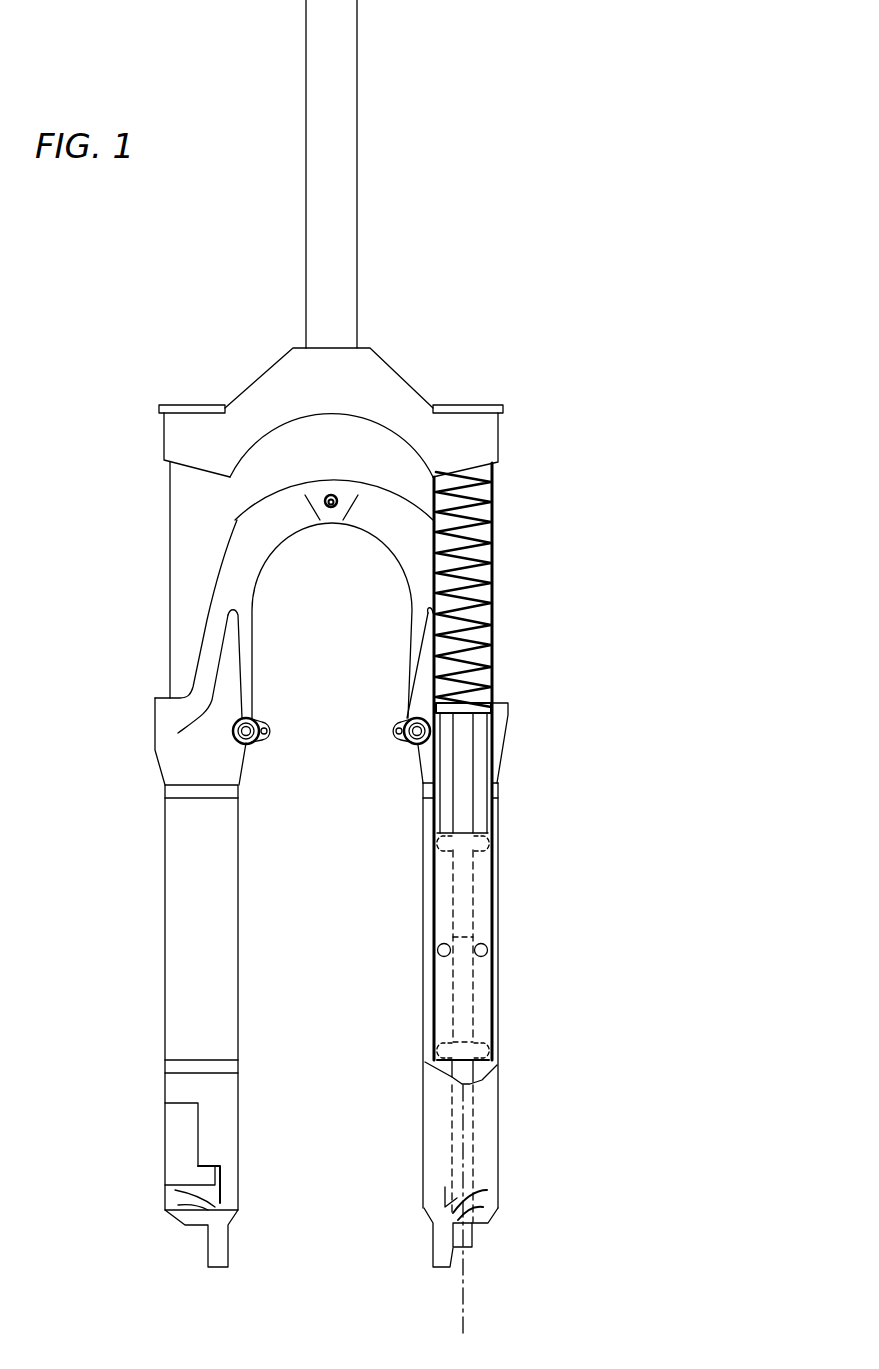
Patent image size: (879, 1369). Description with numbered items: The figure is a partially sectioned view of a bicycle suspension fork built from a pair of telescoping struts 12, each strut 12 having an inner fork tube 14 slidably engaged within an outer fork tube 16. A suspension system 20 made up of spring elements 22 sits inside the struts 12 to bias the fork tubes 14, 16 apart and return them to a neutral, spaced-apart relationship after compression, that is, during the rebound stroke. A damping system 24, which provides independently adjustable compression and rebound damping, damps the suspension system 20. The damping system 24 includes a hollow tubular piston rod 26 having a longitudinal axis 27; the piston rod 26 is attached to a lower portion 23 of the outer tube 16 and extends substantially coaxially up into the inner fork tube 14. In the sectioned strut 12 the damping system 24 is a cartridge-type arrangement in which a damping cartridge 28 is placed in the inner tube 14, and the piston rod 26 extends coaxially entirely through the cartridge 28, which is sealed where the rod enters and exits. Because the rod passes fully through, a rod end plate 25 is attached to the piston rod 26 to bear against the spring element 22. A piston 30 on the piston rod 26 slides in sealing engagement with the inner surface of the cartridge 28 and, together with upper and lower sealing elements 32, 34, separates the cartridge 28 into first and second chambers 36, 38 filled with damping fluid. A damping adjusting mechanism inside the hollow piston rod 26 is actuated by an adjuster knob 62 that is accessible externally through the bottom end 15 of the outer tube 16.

The telescoping strut 12 is at (262, 883).
The inner fork tube 14 is at (240, 486).
The bottom end of outer tube 15 is at (498, 1112).
The outer fork tube 16 is at (246, 1170).
The suspension system 20 is at (514, 494).
The spring element 22 is at (492, 563).
The lower portion of outer tube 23 is at (498, 1187).
The damping system 24 is at (536, 887).
The rod end plate 25 is at (486, 707).
The hollow tubular piston rod 26 is at (472, 1137).
The longitudinal axis 27 is at (464, 1300).
The damping cartridge 28 is at (453, 886).
The piston 30 is at (445, 937).
The upper sealing element 32 is at (489, 843).
The lower sealing element 34 is at (486, 1050).
The first chamber 36 is at (480, 898).
The second chamber 38 is at (475, 995).
The adjuster knob 62 is at (472, 1240).